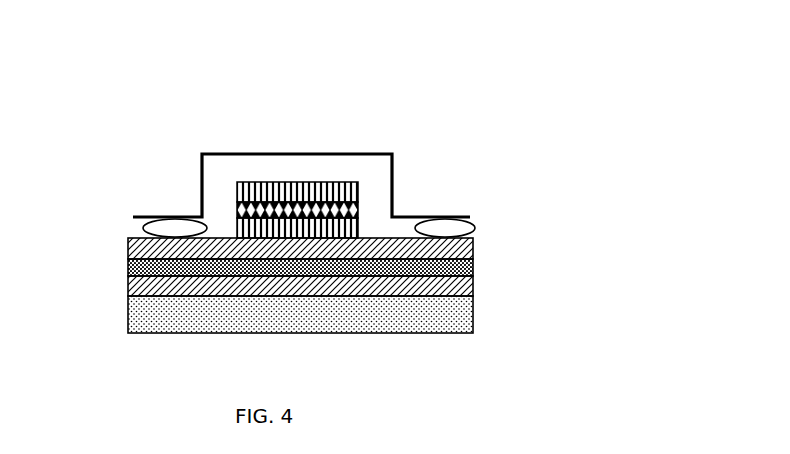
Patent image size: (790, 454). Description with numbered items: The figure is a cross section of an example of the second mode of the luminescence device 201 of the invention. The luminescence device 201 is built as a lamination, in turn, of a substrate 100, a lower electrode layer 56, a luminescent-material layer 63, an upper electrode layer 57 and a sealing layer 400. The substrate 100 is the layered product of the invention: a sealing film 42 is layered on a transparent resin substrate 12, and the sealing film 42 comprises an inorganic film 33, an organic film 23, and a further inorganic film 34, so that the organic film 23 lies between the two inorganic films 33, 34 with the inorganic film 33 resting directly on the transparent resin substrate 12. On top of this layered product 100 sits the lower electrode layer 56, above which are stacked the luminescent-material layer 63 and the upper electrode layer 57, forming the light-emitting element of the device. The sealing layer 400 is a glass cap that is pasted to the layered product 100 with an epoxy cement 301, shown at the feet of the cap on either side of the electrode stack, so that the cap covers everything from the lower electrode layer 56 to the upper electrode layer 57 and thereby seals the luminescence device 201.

The luminescence device 201 is at (184, 80).
The sealing layer 400 is at (372, 154).
The epoxy cement 301 is at (445, 228).
The upper electrode layer 57 is at (358, 183).
The luminescent-material layer 63 is at (357, 210).
The lower electrode layer 56 is at (357, 230).
The substrate 100 is at (113, 242).
The sealing film 42 is at (593, 218).
The inorganic film 34 is at (443, 247).
The organic film 23 is at (443, 267).
The inorganic film 33 is at (443, 293).
The transparent resin substrate 12 is at (445, 327).